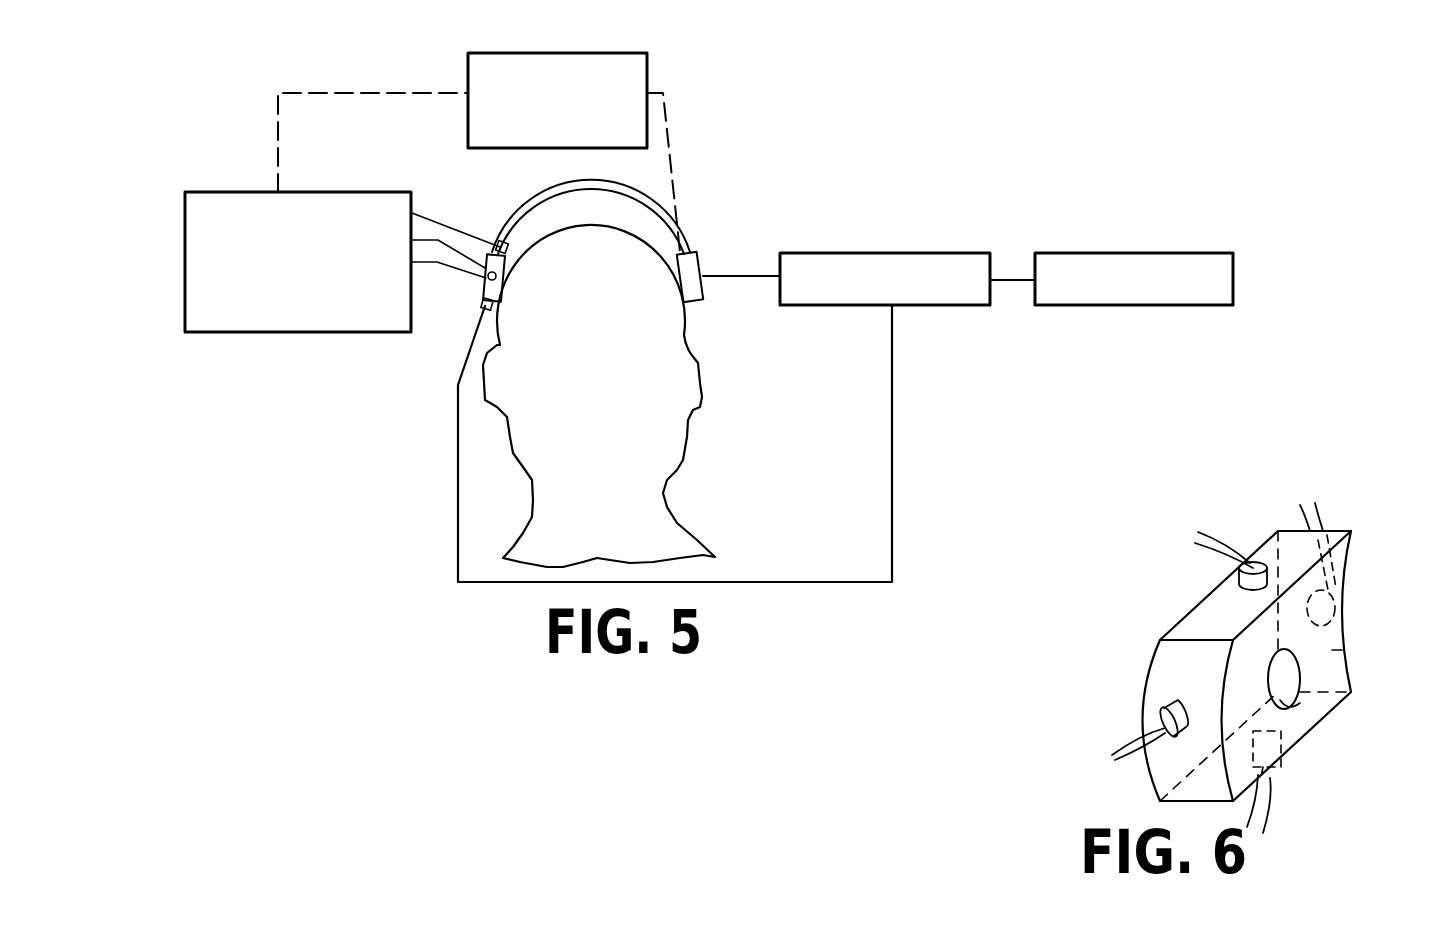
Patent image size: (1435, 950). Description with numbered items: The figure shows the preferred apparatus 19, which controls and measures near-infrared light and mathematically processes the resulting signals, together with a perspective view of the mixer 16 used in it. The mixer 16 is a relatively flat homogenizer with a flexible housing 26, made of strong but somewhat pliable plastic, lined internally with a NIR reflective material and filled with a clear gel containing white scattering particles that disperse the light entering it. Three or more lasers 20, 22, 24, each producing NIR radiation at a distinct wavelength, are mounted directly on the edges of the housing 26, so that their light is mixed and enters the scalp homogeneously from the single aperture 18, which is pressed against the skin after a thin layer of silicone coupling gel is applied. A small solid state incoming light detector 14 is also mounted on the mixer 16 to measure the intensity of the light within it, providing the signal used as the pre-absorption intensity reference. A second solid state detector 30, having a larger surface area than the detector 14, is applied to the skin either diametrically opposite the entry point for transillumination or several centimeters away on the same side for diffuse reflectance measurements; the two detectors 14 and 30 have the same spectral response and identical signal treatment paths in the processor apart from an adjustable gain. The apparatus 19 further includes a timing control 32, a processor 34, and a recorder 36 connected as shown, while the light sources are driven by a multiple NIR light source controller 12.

In FIG. 5, the multiple NIR light source controller 12 is at (283, 333).
In FIG. 5, the incoming light detector 14 is at (486, 306).
In FIG. 6, the incoming light detector 14 is at (1290, 748).
In FIG. 6, the mixer 16 is at (1367, 568).
In FIG. 6, the aperture 18 is at (1303, 680).
In FIG. 5, the apparatus 19 is at (782, 193).
In FIG. 5, the laser 20 is at (486, 281).
In FIG. 6, the laser 20 is at (1160, 720).
In FIG. 5, the laser 22 is at (500, 248).
In FIG. 6, the laser 22 is at (1238, 580).
In FIG. 5, the laser 24 is at (485, 268).
In FIG. 6, the laser 24 is at (1335, 612).
In FIG. 6, the housing 26 is at (1332, 650).
In FIG. 5, the solid state detector 30 is at (705, 299).
In FIG. 5, the timing control 32 is at (592, 28).
In FIG. 5, the processor 34 is at (921, 230).
In FIG. 5, the recorder 36 is at (1147, 230).